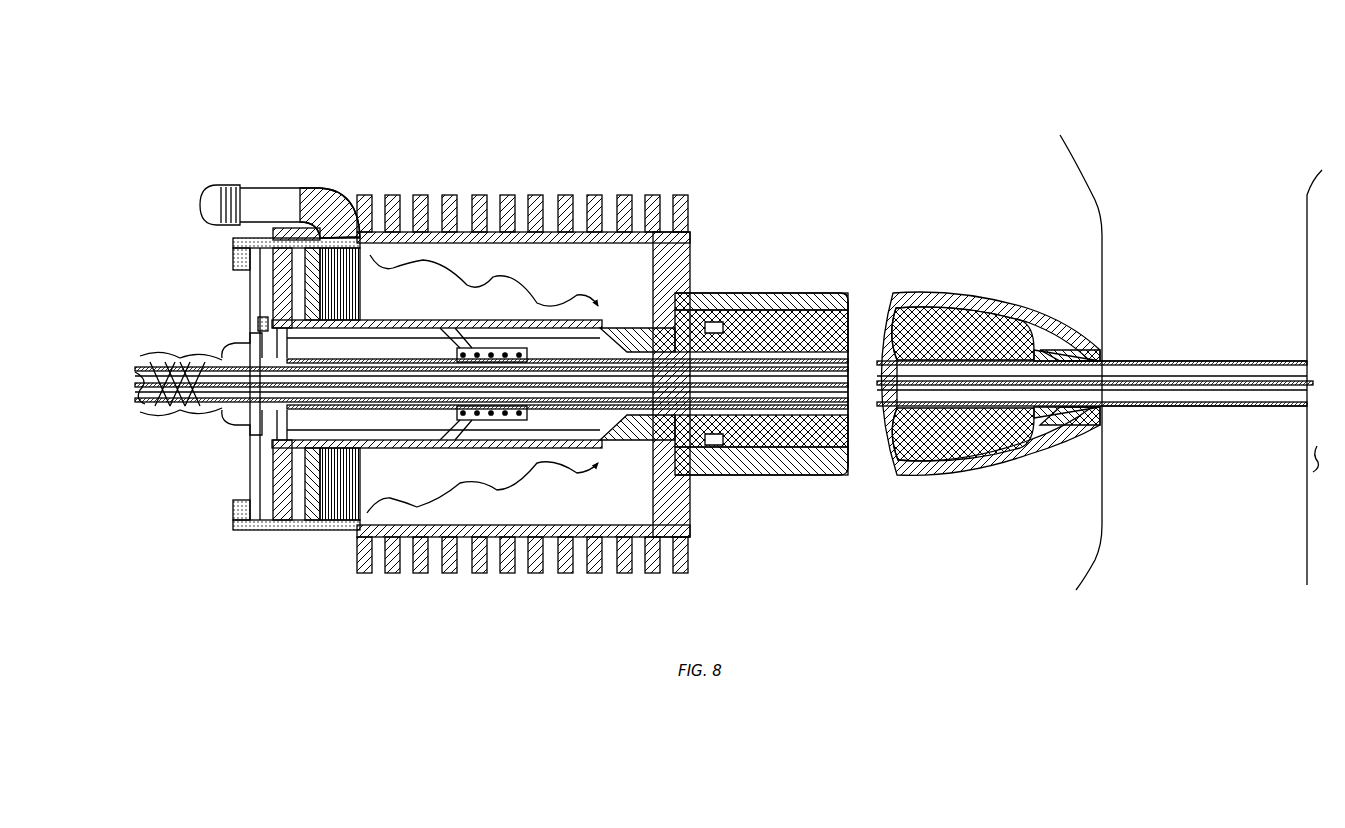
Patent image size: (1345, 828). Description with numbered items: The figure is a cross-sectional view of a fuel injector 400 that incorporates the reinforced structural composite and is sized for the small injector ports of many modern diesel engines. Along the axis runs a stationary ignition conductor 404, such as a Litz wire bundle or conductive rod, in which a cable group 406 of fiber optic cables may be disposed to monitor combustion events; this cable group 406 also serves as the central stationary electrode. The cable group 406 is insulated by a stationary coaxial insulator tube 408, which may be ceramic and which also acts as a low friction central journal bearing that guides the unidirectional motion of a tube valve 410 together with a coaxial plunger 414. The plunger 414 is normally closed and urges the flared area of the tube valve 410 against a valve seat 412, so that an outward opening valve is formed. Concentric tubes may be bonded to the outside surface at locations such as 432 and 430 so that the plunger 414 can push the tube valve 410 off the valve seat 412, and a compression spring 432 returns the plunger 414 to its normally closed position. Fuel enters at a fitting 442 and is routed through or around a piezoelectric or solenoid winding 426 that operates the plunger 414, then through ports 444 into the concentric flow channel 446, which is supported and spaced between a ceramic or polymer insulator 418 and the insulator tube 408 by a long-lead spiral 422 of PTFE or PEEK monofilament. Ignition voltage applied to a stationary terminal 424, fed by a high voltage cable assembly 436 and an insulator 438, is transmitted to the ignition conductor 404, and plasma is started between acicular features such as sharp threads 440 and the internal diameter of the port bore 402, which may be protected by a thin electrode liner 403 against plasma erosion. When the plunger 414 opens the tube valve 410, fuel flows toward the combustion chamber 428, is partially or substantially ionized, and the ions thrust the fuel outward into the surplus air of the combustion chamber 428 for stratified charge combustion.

The fuel injector 400 is at (256, 105).
The port bore 402 is at (1223, 352).
The electrode liner 403 is at (1137, 407).
The ignition conductor 404 is at (207, 413).
The cable group 406 is at (265, 317).
The insulator tube 408 is at (223, 427).
The tube valve 410 is at (390, 432).
The valve seat 412 is at (1027, 447).
The plunger 414 is at (393, 341).
The insulator 418 is at (801, 297).
The long-lead spiral 422 is at (843, 412).
The stationary terminal 424 is at (183, 367).
The solenoid winding 426 is at (598, 500).
The combustion chamber 428 is at (1300, 478).
The location 430 is at (353, 364).
The compression spring 432 is at (483, 347).
The high voltage cable assembly 436 is at (140, 363).
The insulator 438 is at (163, 408).
The sharp threads 440 is at (1078, 453).
The fitting 442 is at (203, 188).
The ports 444 is at (633, 313).
The flow channel 446 is at (937, 350).